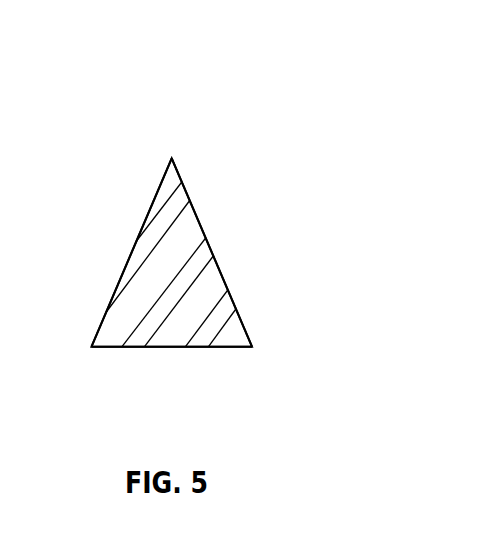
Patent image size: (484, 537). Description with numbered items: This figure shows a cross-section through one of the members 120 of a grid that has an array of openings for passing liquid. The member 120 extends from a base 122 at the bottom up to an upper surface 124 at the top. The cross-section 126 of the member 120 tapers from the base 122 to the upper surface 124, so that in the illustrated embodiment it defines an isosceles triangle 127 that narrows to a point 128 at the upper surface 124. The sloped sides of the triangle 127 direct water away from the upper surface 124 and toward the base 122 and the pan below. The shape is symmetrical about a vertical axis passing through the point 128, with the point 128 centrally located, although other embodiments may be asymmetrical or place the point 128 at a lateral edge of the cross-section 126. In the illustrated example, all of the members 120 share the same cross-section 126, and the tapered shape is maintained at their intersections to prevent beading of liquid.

The member 120 is at (108, 326).
The base 122 is at (155, 371).
The upper surface 124 is at (168, 122).
The cross-section 126 is at (232, 265).
The isosceles triangle 127 is at (201, 221).
The point 128 is at (172, 158).